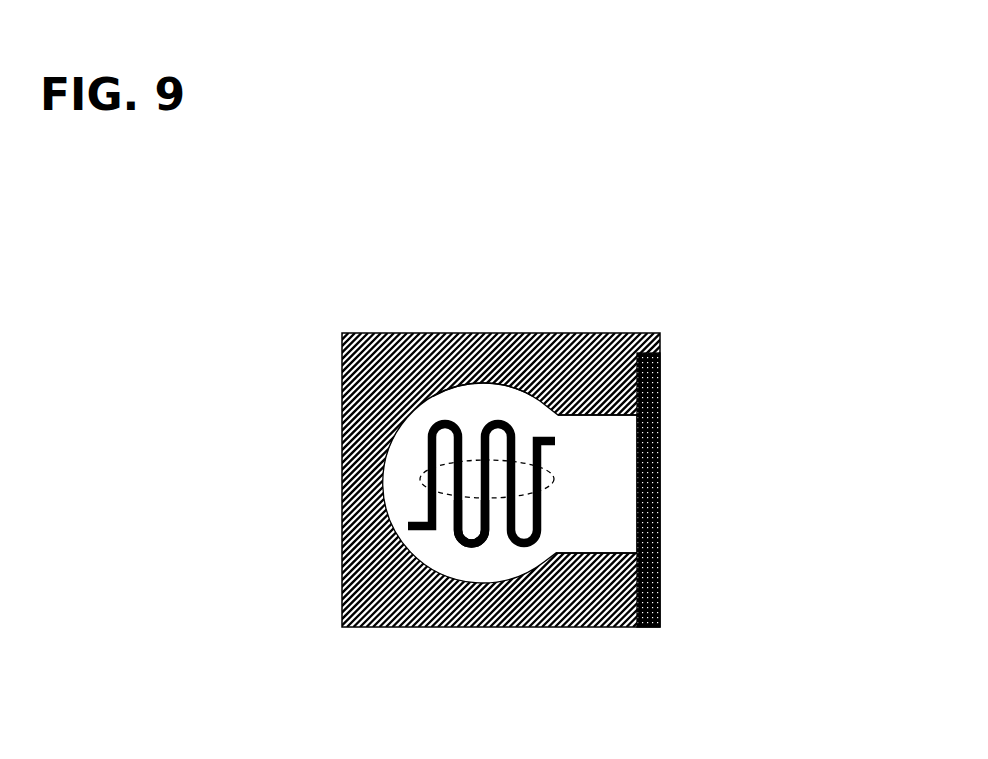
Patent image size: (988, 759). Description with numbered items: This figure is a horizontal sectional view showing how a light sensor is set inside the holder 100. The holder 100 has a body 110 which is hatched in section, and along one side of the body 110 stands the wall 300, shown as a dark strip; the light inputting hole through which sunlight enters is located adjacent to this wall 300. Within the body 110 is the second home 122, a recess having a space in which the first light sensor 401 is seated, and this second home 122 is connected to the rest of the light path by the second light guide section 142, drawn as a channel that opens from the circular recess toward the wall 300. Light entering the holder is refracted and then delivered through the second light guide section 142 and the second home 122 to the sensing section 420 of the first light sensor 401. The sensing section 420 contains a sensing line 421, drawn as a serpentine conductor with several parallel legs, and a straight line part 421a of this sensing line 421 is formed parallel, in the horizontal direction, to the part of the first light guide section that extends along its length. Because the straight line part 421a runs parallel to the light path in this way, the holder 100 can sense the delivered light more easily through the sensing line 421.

The holder 100 is at (313, 557).
The body 110 is at (478, 406).
The second home 122 is at (475, 408).
The second light guide section 142 is at (587, 493).
The wall 300 is at (663, 387).
The first light sensor 401 is at (505, 400).
The sensing section 420 is at (383, 487).
The sensing line 421 is at (472, 549).
The straight line part 421a is at (547, 481).